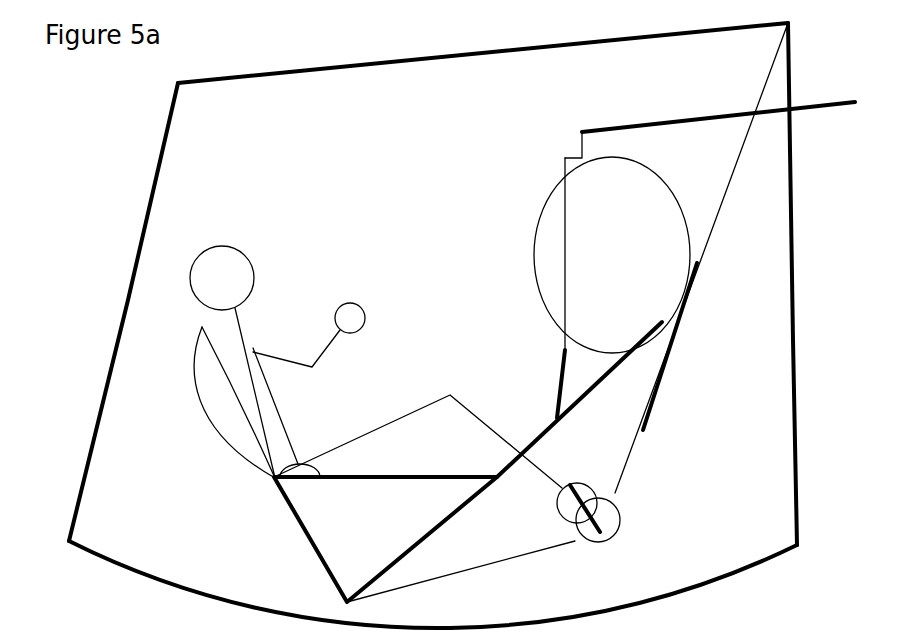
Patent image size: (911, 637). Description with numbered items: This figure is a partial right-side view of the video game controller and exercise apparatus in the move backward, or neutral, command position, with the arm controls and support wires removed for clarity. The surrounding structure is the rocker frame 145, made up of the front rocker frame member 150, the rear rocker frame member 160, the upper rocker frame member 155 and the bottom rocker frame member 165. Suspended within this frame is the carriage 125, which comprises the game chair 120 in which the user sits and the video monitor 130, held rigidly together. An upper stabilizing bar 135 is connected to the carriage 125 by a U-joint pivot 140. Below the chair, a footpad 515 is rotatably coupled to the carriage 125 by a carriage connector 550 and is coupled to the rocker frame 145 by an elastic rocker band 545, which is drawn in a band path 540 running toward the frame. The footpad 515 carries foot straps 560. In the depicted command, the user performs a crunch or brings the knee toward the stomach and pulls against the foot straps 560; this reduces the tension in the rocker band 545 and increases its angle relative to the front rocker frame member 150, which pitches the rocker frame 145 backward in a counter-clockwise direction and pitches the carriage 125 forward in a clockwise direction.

The game chair 120 is at (203, 419).
The carriage 125 is at (297, 522).
The video monitor 130 is at (545, 204).
The upper stabilizing bar 135 is at (669, 121).
The U-joint pivot 140 is at (578, 135).
The rocker frame 145 is at (727, 572).
The front rocker frame member 150 is at (795, 262).
The upper rocker frame member 155 is at (341, 68).
The rear rocker frame member 160 is at (138, 245).
The bottom rocker frame member 165 is at (137, 571).
The footpad 515 is at (623, 516).
The cable 540 is at (705, 249).
The elastic rocker band 545 is at (671, 350).
The carriage connector 550 is at (458, 574).
The foot straps 560 is at (560, 510).